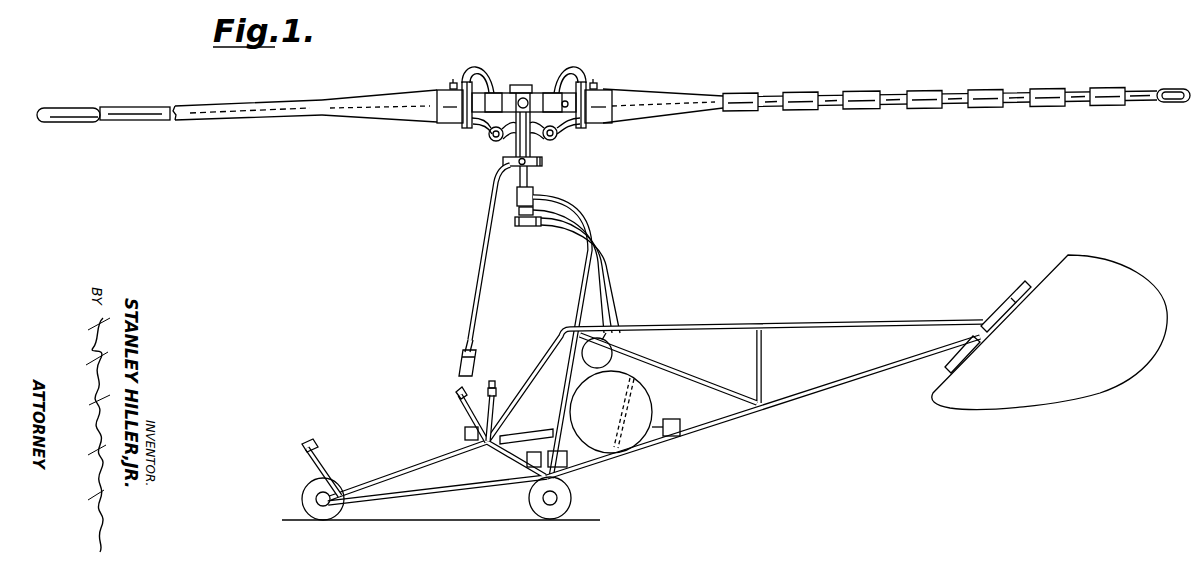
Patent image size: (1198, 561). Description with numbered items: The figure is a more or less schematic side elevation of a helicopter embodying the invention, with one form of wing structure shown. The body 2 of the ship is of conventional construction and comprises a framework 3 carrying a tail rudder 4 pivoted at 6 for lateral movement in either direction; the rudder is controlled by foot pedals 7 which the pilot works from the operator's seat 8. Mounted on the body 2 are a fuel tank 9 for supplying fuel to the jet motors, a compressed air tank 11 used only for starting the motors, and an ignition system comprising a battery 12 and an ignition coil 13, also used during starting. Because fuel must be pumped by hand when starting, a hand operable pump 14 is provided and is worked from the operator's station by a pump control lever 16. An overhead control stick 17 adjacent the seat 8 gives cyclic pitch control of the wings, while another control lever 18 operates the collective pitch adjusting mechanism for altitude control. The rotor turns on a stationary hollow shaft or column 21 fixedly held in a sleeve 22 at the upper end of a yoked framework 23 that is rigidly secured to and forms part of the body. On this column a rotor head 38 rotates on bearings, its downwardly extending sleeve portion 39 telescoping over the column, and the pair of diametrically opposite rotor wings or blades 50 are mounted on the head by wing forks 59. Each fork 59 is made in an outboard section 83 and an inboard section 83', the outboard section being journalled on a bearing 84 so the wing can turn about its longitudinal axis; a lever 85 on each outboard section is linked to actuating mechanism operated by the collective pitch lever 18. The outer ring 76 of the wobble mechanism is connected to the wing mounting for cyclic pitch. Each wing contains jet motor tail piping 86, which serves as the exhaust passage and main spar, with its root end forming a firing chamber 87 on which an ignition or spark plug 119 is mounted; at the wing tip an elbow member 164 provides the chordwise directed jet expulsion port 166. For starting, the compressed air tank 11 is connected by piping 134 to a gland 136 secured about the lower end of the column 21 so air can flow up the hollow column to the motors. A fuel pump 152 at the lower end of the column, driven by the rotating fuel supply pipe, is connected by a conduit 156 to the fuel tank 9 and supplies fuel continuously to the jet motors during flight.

The body 2 is at (763, 320).
The framework 3 is at (782, 400).
The tail rudder 4 is at (1085, 390).
The pivot 6 is at (1012, 297).
The foot pedals 7 is at (316, 454).
The operator's seat 8 is at (512, 436).
The fuel tank 9 is at (640, 401).
The compressed air tank 11 is at (606, 358).
The battery 12 is at (569, 463).
The ignition coil 13 is at (525, 461).
The hand operable pump 14 is at (673, 422).
The pump control lever 16 is at (452, 404).
The overhead control stick 17 is at (459, 357).
The control lever 18 is at (495, 388).
The hollow shaft or column 21 is at (530, 181).
The sleeve 22 is at (517, 195).
The yoked framework 23 is at (583, 211).
The rotor head 38 is at (512, 137).
The sleeve portion 39 is at (533, 140).
The rotor wings or blades 50 is at (222, 104).
The wing fork 59 is at (510, 86).
The outer ring 76 is at (543, 162).
The outboard section 83 is at (535, 106).
The inboard section 83' is at (524, 79).
The bearing 84 is at (478, 72).
The lever 85 is at (587, 115).
The jet motor tail piping 86 is at (365, 100).
The firing chamber 87 is at (452, 108).
The ignition or spark plug 119 is at (452, 80).
The piping 134 is at (599, 292).
The gland 136 is at (515, 218).
The fuel pump 152 is at (522, 226).
The conduit 156 is at (557, 227).
The elbow member 164 is at (64, 117).
The jet expulsion port 166 is at (1172, 102).